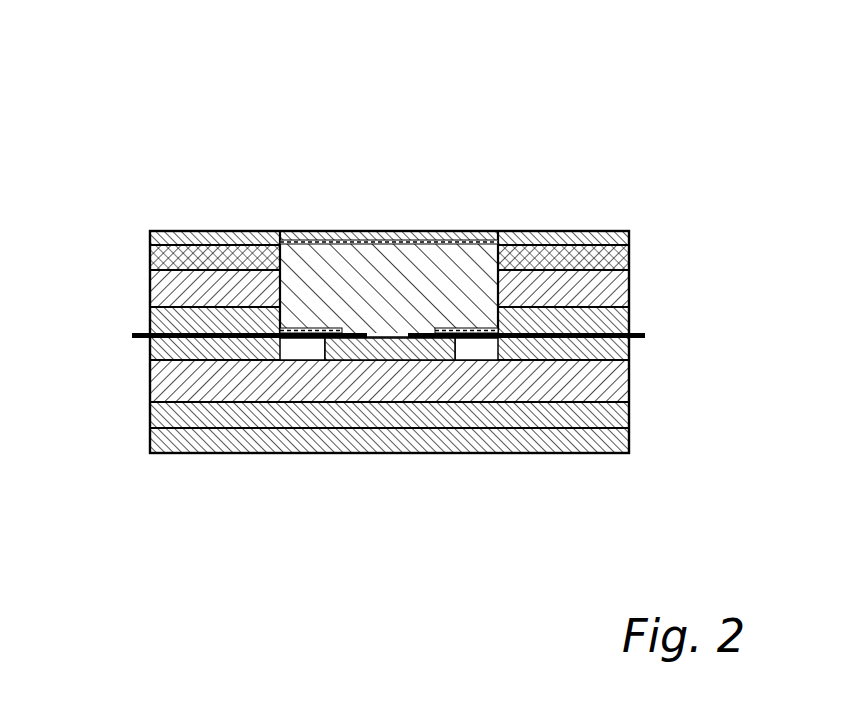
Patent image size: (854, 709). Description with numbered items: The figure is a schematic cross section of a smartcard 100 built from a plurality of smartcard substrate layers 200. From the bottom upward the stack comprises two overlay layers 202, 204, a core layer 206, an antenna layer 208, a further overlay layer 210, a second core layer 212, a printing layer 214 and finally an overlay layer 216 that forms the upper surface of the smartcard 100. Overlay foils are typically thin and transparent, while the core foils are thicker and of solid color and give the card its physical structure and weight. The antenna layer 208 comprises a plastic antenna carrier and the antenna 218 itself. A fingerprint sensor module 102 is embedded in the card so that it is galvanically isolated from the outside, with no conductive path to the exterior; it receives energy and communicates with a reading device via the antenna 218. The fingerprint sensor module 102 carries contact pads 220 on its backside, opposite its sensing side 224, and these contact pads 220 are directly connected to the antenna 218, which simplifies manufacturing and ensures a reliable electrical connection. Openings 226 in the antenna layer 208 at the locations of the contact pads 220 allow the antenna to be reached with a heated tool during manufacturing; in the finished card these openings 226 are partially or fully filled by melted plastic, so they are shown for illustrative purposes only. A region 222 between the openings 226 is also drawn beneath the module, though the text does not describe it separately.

The smartcard 100 is at (350, 107).
The fingerprint sensor module 102 is at (308, 258).
The smartcard substrate layers 200 is at (643, 231).
The overlay layer 202 is at (150, 440).
The overlay layer 204 is at (150, 415).
The core layer 206 is at (150, 382).
The antenna layer 208 is at (150, 350).
The overlay layer 210 is at (150, 321).
The core layer 212 is at (150, 288).
The printing layer 214 is at (150, 259).
The overlay layer 216 is at (150, 238).
The antenna 218 is at (640, 315).
The contact pads 220 is at (475, 327).
The hatched fill region 222 is at (393, 350).
The sensing side 224 is at (403, 230).
The openings 226 is at (302, 350).